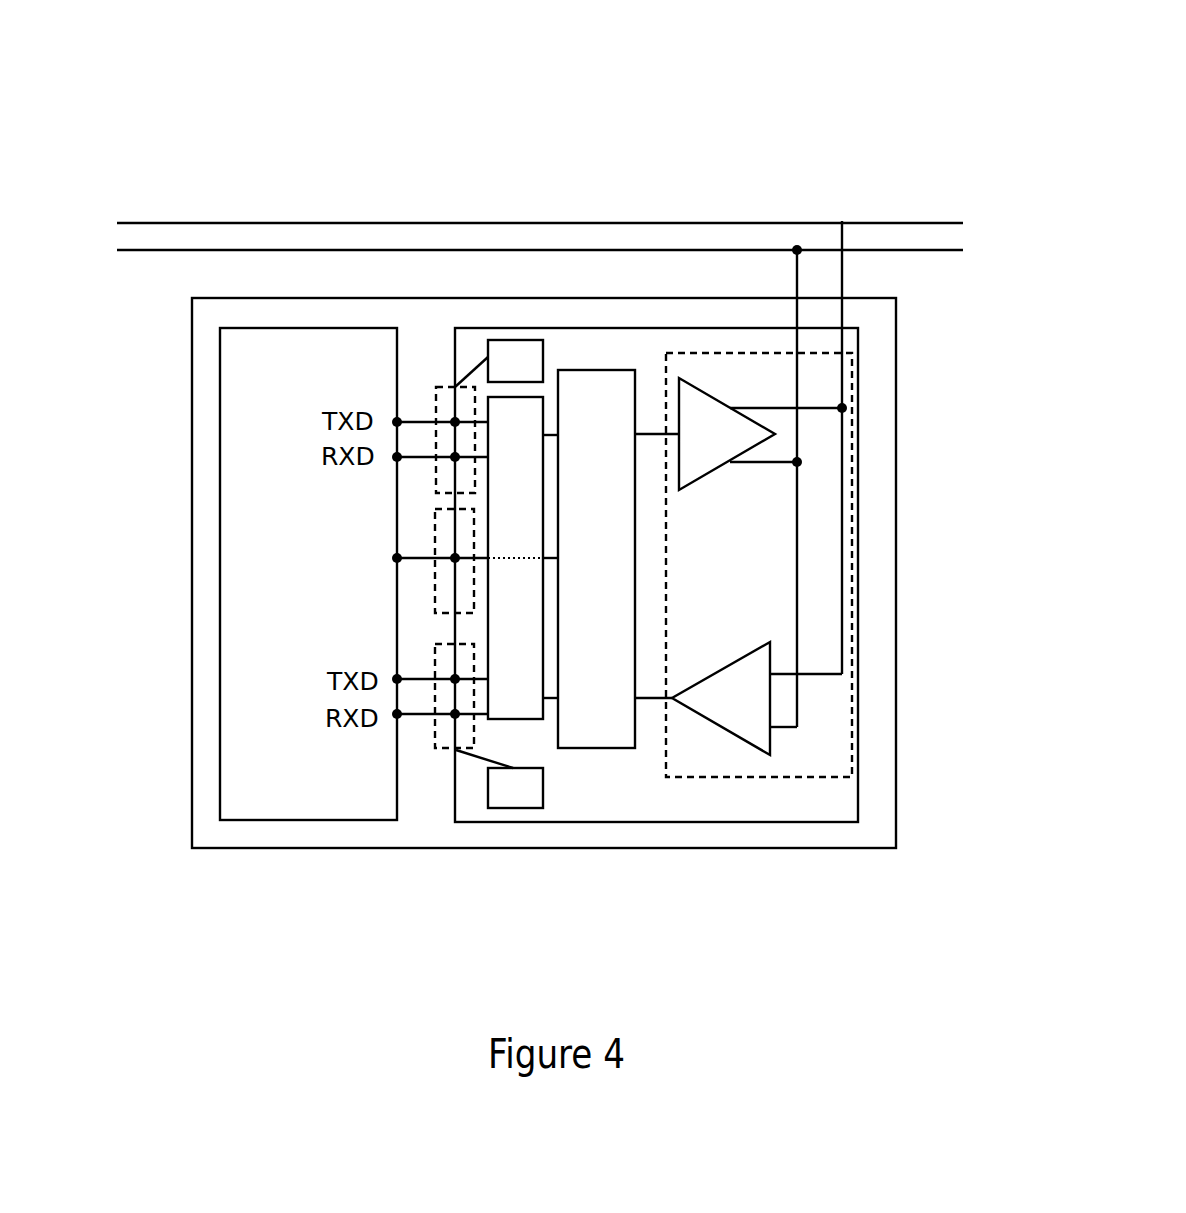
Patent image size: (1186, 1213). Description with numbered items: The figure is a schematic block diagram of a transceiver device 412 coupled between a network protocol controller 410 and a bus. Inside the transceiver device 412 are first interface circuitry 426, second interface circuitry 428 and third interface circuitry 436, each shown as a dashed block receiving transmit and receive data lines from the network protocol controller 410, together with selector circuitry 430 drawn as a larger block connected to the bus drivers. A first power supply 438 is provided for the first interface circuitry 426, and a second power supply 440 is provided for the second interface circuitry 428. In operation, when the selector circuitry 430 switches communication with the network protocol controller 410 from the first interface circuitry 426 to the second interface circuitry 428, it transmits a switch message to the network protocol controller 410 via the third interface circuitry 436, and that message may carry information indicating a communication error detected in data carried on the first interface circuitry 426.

The network protocol controller 410 is at (326, 557).
The transceiver device 412 is at (643, 328).
The first interface circuitry 426 is at (436, 387).
The second interface circuitry 428 is at (433, 750).
The selector circuitry 430 is at (603, 753).
The third interface circuitry 436 is at (430, 562).
The first power supply 438 is at (487, 340).
The second power supply 440 is at (487, 815).